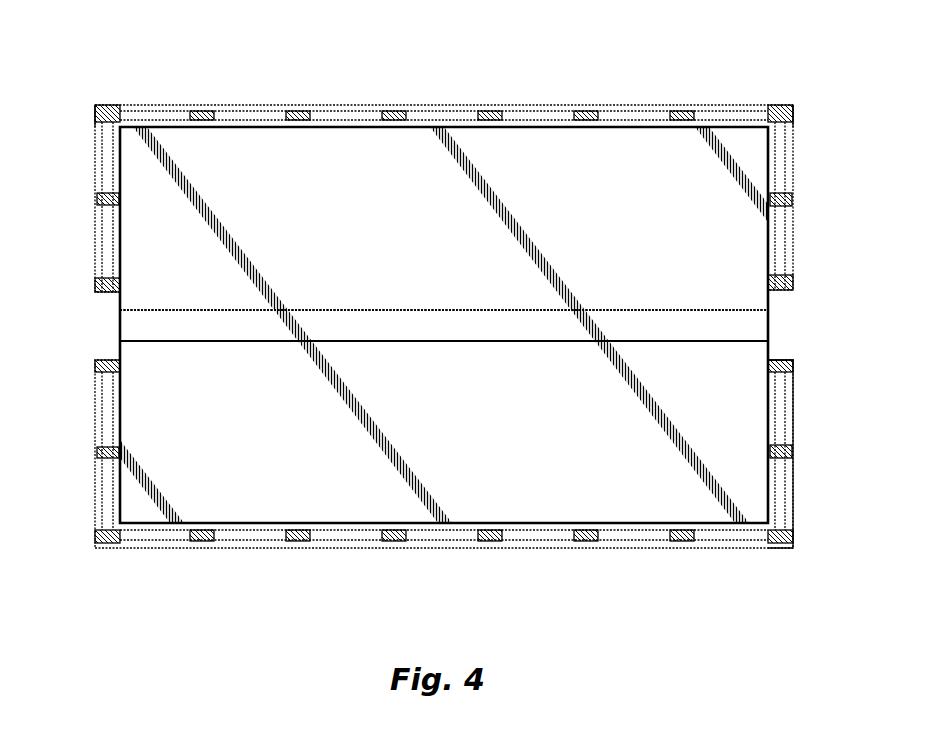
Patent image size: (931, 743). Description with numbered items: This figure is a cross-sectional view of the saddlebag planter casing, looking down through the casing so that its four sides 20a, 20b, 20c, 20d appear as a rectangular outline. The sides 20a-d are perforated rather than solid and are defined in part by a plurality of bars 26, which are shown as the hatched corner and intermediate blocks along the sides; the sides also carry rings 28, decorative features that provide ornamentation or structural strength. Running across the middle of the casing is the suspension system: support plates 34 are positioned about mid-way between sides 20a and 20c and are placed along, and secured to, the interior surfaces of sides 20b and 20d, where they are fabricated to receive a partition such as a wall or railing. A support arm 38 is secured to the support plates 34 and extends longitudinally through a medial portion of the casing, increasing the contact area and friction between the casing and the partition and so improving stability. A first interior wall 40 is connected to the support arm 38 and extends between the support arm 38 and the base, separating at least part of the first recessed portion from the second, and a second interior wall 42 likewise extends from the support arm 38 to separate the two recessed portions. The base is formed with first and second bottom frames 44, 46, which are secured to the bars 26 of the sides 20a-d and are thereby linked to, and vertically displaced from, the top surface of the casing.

The side 20a is at (519, 550).
The side 20b is at (795, 428).
The side 20c is at (612, 105).
The side 20d is at (96, 433).
The bars 26 is at (105, 548).
The rings 28 is at (790, 166).
The support plate 34 is at (117, 345).
The support arm 38 is at (636, 327).
The first interior wall 40 is at (232, 341).
The second interior wall 42 is at (732, 308).
The first bottom frame 44 is at (795, 522).
The second bottom frame 46 is at (150, 104).